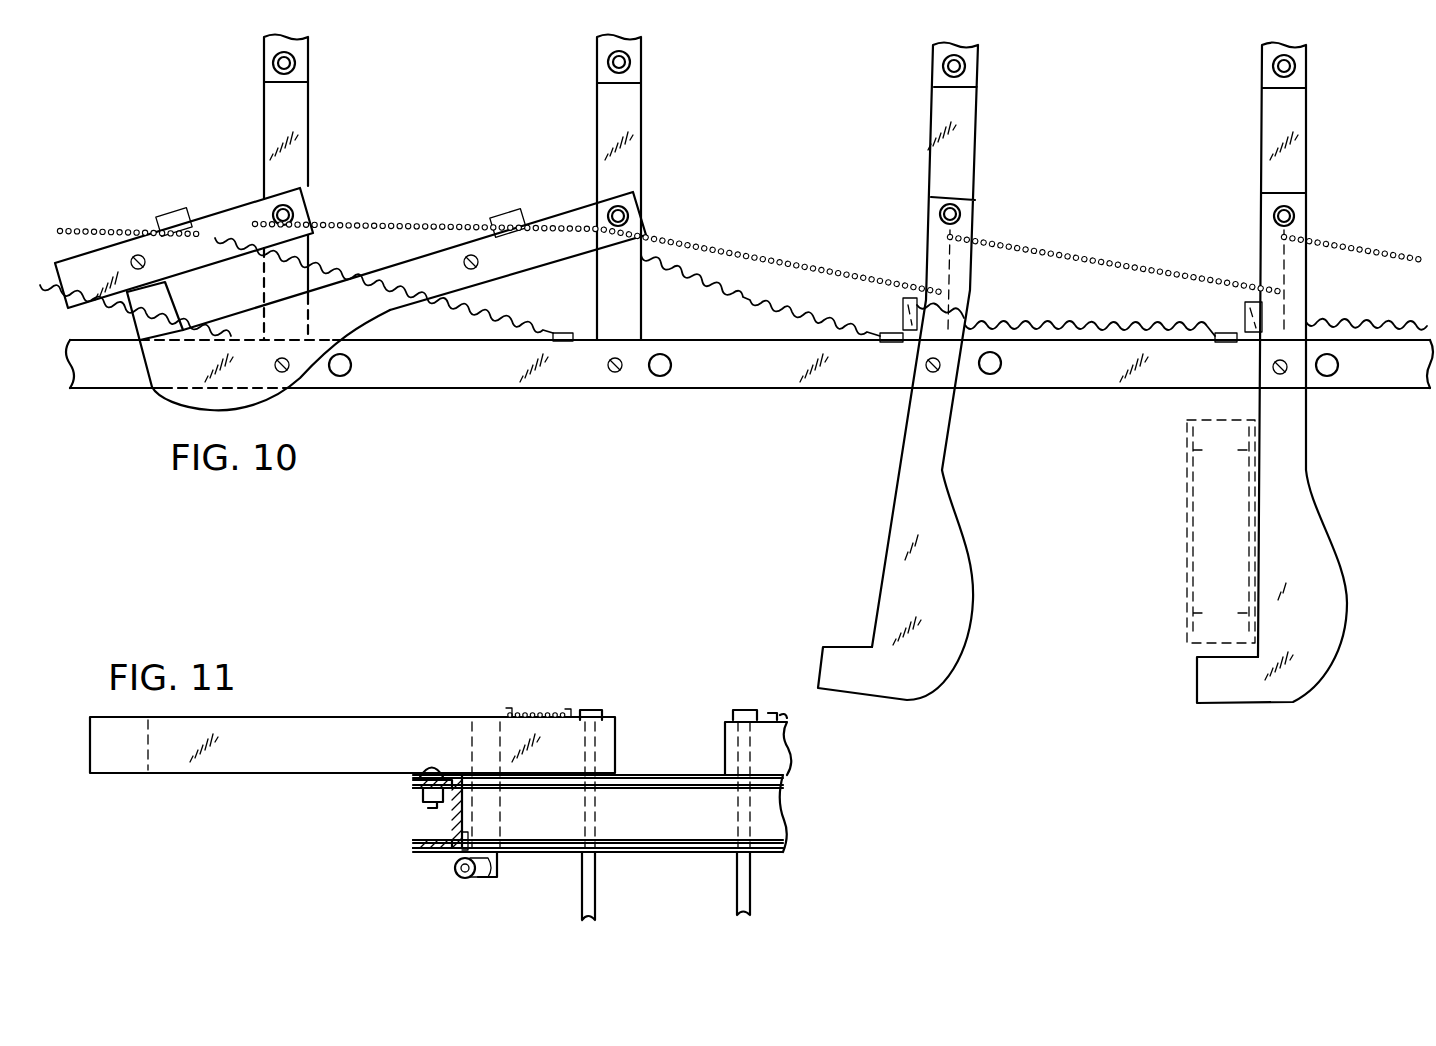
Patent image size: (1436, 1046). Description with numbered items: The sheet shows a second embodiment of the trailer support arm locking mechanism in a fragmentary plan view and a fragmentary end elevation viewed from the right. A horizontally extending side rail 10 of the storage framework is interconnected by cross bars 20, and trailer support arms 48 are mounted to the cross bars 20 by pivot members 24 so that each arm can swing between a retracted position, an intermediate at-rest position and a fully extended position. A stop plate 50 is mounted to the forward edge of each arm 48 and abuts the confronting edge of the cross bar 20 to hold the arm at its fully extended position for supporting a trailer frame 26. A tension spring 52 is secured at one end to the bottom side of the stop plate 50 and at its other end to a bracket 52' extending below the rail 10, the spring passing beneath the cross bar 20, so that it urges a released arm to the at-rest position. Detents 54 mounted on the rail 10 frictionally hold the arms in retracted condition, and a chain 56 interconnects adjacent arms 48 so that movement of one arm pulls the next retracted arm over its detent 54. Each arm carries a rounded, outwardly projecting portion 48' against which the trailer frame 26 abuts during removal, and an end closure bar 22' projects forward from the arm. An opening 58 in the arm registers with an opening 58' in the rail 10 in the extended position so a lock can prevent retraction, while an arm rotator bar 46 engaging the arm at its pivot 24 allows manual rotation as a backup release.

In FIG. 10, the side rail 10 is at (762, 390).
In FIG. 11, the side rail 10 is at (438, 850).
In FIG. 10, the cross bar 20 is at (309, 128).
In FIG. 11, the cross bar 20 is at (784, 808).
In FIG. 10, the end closure bar 22' is at (662, 470).
In FIG. 10, the pivot member 24 is at (273, 63).
In FIG. 11, the pivot member 24 is at (591, 708).
In FIG. 10, the trailer frame 26 is at (1187, 436).
In FIG. 11, the arm rotator bar 46 is at (736, 890).
In FIG. 10, the trailer support arm 48 is at (710, 241).
In FIG. 11, the trailer support arm 48 is at (440, 743).
In FIG. 10, the rounded outwardly projecting portion 48' is at (774, 497).
In FIG. 10, the stop plate 50 is at (176, 212).
In FIG. 11, the stop plate 50 is at (500, 862).
In FIG. 10, the tension spring 52 is at (733, 306).
In FIG. 11, the tension spring 52 is at (472, 894).
In FIG. 10, the bracket 52' is at (891, 312).
In FIG. 11, the bracket 52' is at (501, 830).
In FIG. 10, the detent 54 is at (340, 376).
In FIG. 11, the detent 54 is at (432, 766).
In FIG. 10, the chain 56 is at (100, 228).
In FIG. 11, the chain 56 is at (537, 710).
In FIG. 10, the opening in arm 58 is at (703, 287).
In FIG. 10, the opening in rail 58' is at (451, 391).